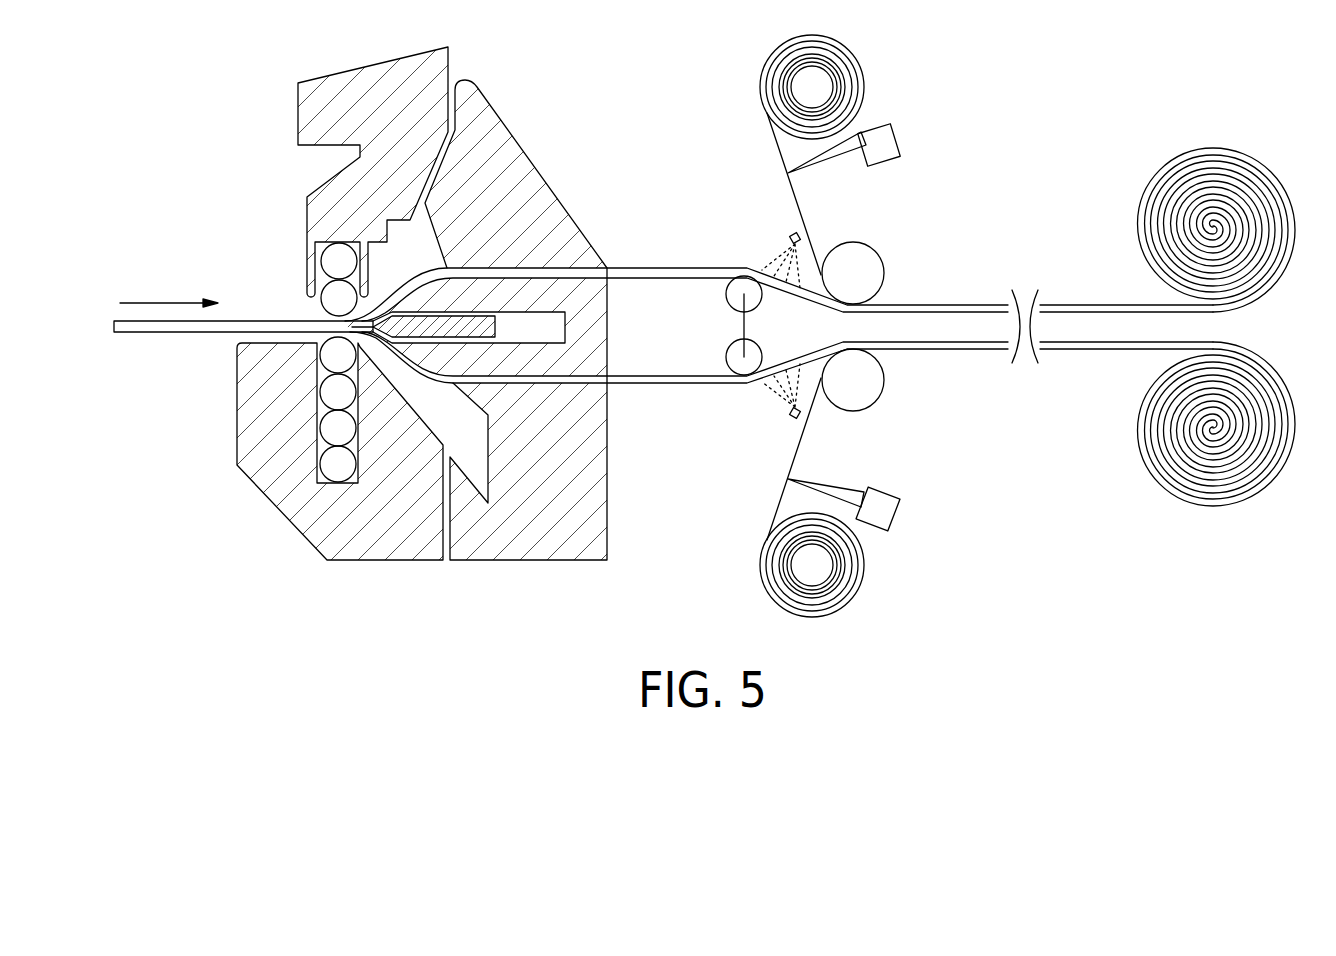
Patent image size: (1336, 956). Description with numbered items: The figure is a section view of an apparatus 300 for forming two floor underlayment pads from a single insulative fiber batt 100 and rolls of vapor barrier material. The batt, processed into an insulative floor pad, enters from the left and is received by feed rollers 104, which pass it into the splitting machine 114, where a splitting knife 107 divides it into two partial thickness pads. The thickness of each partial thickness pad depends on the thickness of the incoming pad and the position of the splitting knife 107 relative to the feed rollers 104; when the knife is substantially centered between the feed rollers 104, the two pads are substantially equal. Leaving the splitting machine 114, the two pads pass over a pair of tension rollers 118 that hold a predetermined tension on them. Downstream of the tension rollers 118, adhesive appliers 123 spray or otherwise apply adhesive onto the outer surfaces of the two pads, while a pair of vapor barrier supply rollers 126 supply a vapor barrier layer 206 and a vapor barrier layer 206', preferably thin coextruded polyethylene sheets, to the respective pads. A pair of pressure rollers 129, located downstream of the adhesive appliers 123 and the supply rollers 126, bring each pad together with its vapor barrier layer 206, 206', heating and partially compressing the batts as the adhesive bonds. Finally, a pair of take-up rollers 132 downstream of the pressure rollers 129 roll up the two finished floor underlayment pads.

The insulative fiber batt 100 is at (227, 318).
The feed rollers 104 is at (332, 302).
The splitting knife 107 is at (479, 326).
The splitting machine 114 is at (640, 592).
The tension rollers 118 is at (733, 355).
The adhesive appliers 123 is at (791, 233).
The vapor barrier supply rollers 126 is at (812, 565).
The pressure rollers 129 is at (866, 272).
The take-up rollers 132 is at (1147, 424).
The vapor barrier layer 206 is at (803, 153).
The vapor barrier layer 206' is at (801, 503).
The apparatus 300 is at (372, 606).